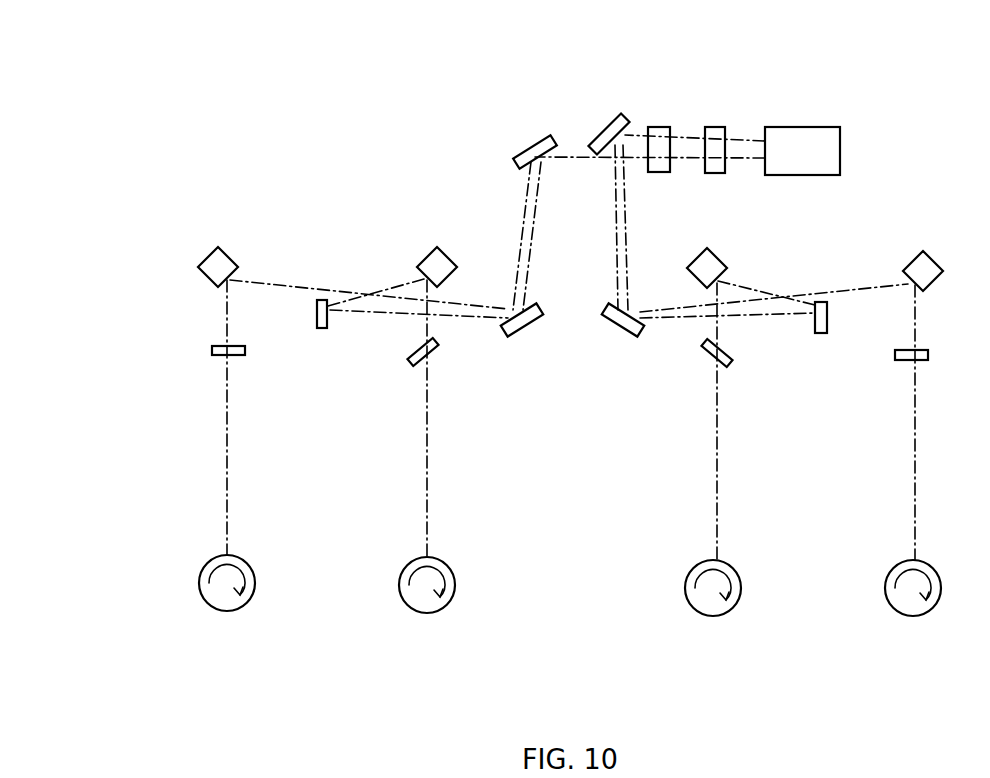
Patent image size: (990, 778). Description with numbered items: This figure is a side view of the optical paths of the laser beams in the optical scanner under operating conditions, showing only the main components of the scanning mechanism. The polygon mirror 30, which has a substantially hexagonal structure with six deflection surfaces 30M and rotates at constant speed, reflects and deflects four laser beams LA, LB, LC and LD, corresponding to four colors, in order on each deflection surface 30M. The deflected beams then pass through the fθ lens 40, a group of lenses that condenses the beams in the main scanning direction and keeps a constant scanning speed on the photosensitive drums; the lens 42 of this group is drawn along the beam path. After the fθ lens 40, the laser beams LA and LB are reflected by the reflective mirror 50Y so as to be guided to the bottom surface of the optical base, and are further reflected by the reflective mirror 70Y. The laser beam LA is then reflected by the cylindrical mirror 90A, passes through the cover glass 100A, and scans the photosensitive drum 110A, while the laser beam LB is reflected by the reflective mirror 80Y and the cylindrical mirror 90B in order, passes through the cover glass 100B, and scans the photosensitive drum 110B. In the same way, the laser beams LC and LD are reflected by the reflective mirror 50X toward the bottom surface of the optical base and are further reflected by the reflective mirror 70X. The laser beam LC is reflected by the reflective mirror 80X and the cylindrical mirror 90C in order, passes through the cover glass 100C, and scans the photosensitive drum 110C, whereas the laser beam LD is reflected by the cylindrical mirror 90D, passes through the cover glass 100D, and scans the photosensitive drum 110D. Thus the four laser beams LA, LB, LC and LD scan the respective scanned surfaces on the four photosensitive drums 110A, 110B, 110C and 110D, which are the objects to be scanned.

The polygon mirror 30 is at (802, 137).
The deflection surface 30M is at (756, 134).
The fθ lens 40 is at (717, 138).
The lens 42 is at (657, 135).
The reflective mirror 50X is at (615, 133).
The reflective mirror 50Y is at (533, 147).
The reflective mirror 70X is at (617, 332).
The reflective mirror 70Y is at (530, 330).
The reflective mirror 80X is at (820, 335).
The reflective mirror 80Y is at (323, 328).
The cylindrical mirror 90A is at (213, 262).
The cylindrical mirror 90B is at (432, 262).
The cylindrical mirror 90C is at (710, 263).
The cylindrical mirror 90D is at (925, 265).
The cover glass 100A is at (222, 357).
The cover glass 100B is at (417, 363).
The cover glass 100C is at (727, 363).
The cover glass 100D is at (920, 360).
The laser beam LA is at (225, 500).
The laser beam LB is at (425, 500).
The laser beam LC is at (718, 500).
The laser beam LD is at (918, 500).
The photosensitive drum 110A is at (225, 613).
The photosensitive drum 110B is at (427, 615).
The photosensitive drum 110C is at (713, 618).
The photosensitive drum 110D is at (913, 618).